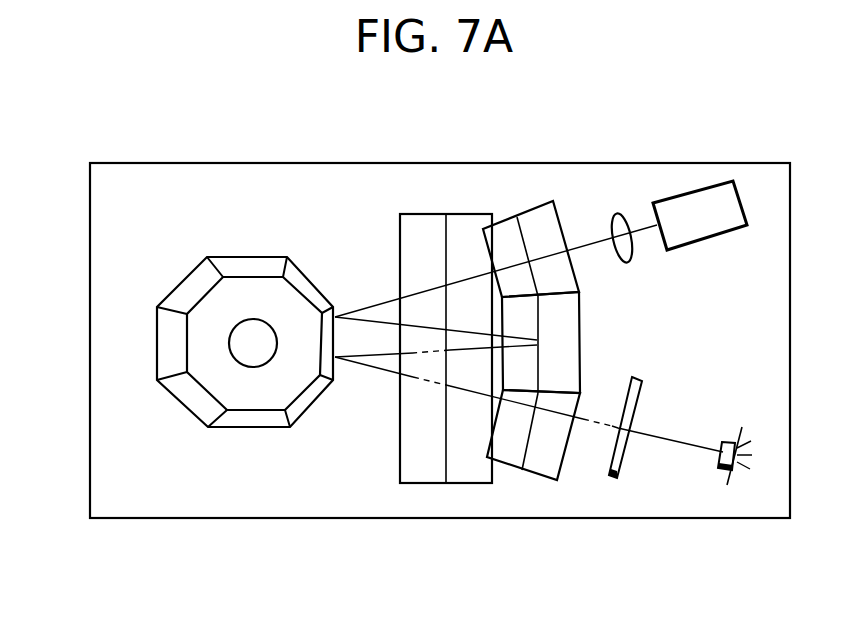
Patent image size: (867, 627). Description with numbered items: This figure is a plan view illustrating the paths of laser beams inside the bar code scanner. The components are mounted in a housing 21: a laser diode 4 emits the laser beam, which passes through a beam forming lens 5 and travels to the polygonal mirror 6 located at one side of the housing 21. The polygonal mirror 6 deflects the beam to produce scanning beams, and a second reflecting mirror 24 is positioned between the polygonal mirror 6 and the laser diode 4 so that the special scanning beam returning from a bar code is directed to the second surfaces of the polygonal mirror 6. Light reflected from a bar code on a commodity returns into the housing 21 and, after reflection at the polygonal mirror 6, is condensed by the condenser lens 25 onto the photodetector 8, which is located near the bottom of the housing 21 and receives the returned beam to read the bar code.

The housing 21 is at (90, 460).
The polygonal mirror 6 is at (293, 300).
The second reflecting mirror 24 is at (426, 222).
The beam forming lens 5 is at (629, 211).
The laser diode 4 is at (700, 207).
The condenser lens 25 is at (612, 460).
The photodetector 8 is at (720, 467).